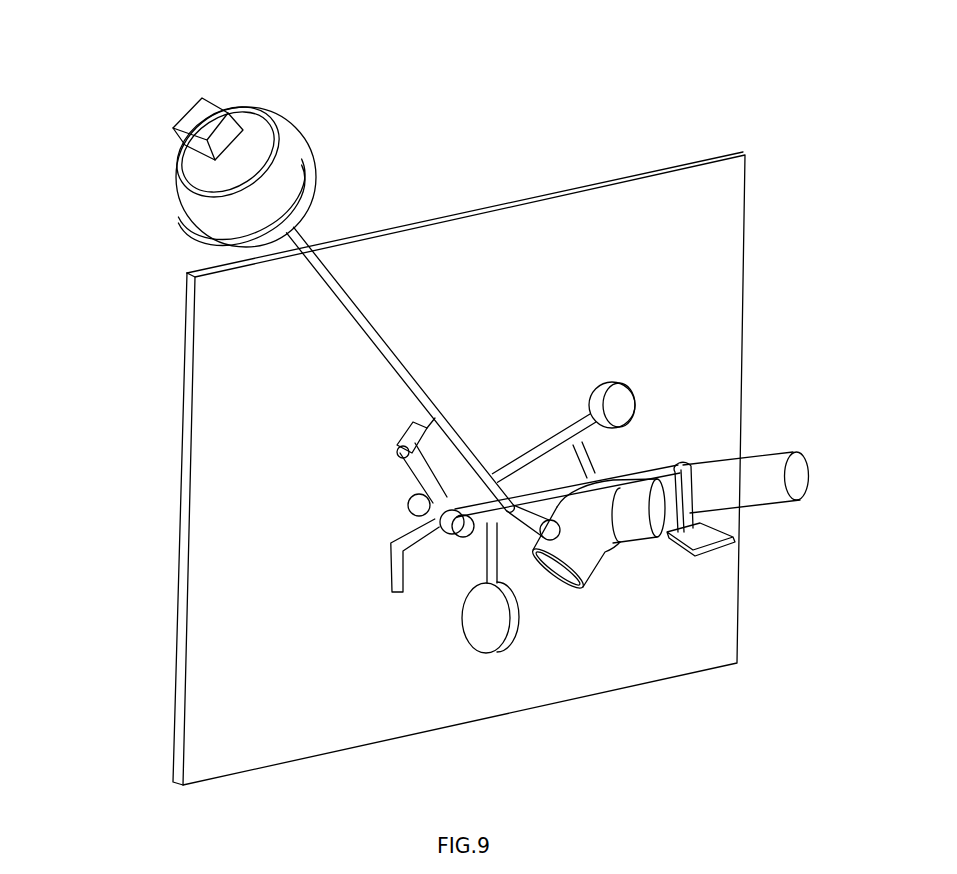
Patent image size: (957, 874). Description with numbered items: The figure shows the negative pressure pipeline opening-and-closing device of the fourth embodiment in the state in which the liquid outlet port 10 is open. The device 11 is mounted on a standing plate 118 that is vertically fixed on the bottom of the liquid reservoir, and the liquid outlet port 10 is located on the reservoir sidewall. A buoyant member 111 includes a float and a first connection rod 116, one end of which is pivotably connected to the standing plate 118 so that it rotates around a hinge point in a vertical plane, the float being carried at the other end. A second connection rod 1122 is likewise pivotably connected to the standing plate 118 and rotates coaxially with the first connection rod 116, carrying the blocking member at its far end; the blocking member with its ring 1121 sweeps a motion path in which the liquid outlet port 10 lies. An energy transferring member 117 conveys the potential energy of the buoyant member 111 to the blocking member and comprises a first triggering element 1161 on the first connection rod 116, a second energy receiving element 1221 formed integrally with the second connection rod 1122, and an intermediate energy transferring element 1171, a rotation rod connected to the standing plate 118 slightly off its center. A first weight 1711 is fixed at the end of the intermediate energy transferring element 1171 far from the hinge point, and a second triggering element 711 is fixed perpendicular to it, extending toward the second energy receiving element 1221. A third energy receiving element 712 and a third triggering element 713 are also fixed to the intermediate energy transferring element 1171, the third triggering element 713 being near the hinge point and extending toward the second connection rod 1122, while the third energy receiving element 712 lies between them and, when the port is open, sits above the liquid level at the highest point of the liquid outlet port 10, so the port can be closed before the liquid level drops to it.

The liquid outlet port 10 is at (563, 580).
The support assembly 11 is at (152, 328).
The buoyant member 111 is at (248, 108).
The first connection rod 116 is at (333, 278).
The first triggering element 1161 is at (422, 422).
The energy transferring member 117 is at (505, 449).
The intermediate energy transferring element 1171 is at (580, 430).
The first weight 1711 is at (618, 395).
The standing plate 118 is at (738, 229).
The lower ring 1121 is at (489, 653).
The second connection rod 1122 is at (497, 556).
The second energy receiving element 1221 is at (685, 460).
The second triggering element 711 is at (597, 444).
The third energy receiving element 712 is at (400, 455).
The third triggering element 713 is at (397, 547).